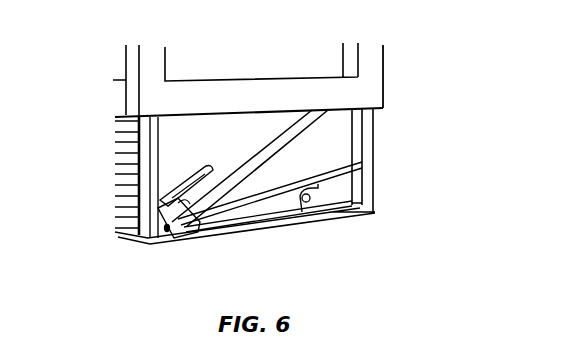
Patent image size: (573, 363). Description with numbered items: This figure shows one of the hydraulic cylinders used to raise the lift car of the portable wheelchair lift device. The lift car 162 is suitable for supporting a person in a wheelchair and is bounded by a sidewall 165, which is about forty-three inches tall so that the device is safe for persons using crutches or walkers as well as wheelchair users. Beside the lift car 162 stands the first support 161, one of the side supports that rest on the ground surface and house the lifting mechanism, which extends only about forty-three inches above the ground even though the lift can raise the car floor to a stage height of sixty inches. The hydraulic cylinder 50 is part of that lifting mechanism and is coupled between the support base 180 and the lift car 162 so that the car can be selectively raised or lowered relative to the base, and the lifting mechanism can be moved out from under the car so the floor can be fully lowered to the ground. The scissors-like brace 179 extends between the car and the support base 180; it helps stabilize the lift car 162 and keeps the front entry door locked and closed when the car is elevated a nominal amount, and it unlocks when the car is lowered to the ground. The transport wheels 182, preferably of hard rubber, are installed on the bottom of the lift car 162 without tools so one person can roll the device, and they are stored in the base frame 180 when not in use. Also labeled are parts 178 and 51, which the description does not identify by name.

The sidewall 165 is at (215, 84).
The lift car 162 is at (375, 95).
The first support 161 is at (368, 135).
The scissors-like brace 179 is at (118, 200).
The support base 180 is at (250, 234).
The hydraulic cylinder 50 is at (258, 156).
The slider bracket 178 is at (208, 167).
The pivot bracket 51 is at (172, 196).
The transport wheels 182 is at (302, 214).